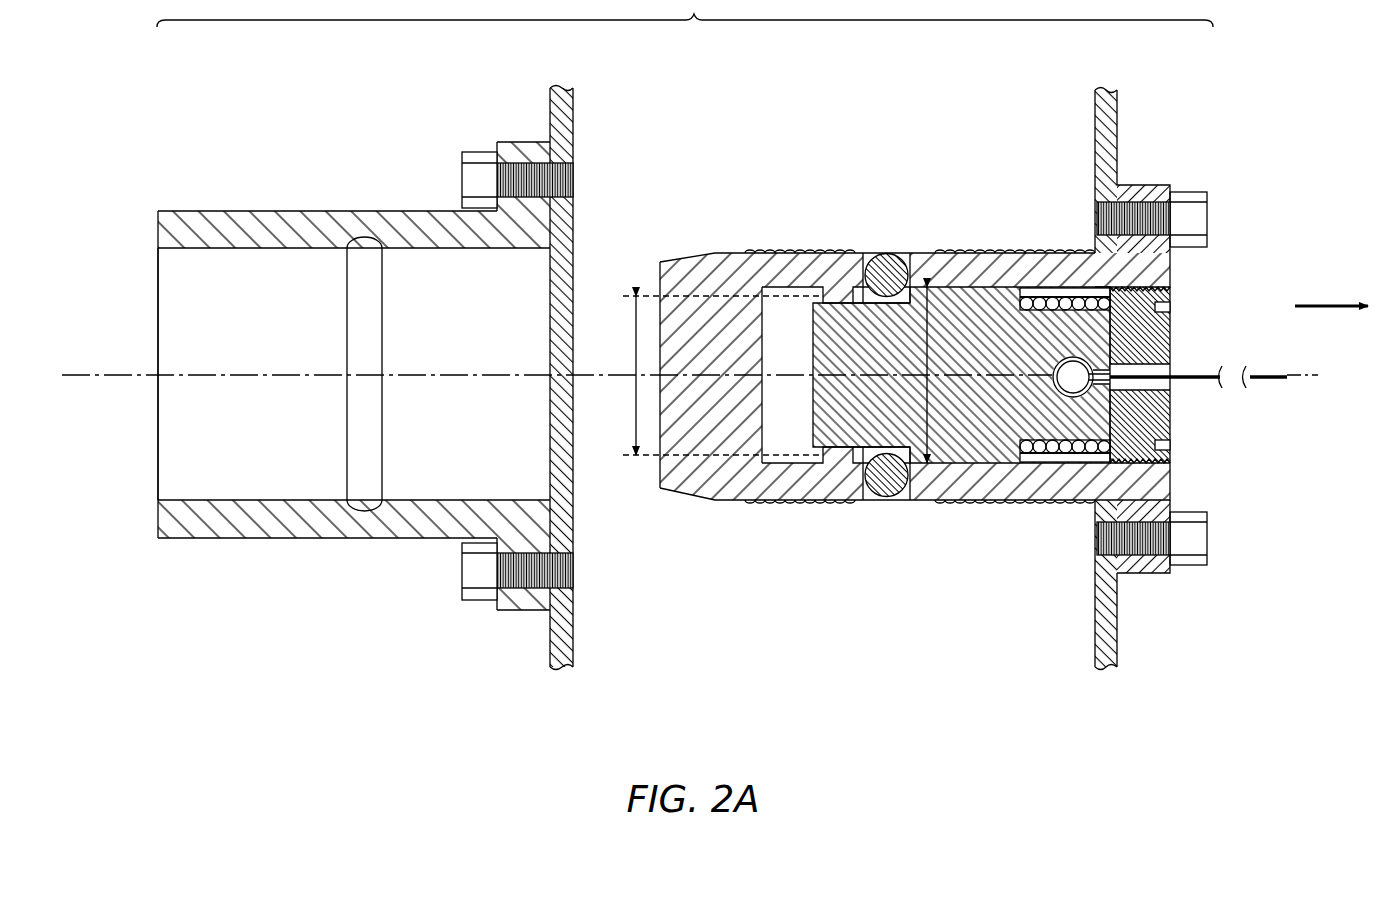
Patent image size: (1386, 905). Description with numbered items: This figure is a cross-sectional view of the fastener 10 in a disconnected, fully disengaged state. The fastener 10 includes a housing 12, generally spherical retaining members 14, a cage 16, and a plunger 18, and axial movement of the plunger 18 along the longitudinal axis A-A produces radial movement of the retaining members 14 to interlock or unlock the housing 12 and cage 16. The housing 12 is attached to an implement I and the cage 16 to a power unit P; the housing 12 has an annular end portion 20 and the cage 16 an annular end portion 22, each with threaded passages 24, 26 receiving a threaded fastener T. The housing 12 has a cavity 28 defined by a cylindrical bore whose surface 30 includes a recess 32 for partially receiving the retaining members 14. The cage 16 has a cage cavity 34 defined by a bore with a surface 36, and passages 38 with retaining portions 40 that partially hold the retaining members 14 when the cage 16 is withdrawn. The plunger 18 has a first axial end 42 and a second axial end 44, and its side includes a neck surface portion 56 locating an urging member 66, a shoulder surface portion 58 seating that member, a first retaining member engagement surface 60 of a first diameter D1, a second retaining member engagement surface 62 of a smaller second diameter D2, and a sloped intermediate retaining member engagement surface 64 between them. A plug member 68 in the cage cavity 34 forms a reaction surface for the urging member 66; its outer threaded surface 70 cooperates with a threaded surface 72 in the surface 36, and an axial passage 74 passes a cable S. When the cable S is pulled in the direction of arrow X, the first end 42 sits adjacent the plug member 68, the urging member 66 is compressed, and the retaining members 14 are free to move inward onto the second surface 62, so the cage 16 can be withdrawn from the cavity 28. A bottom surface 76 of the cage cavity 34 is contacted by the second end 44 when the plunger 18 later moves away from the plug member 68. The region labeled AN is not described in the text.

The fastener 10 is at (685, 13).
The housing 12 is at (696, 376).
The retaining members 14 is at (884, 300).
The cage 16 is at (938, 373).
The plunger 18 is at (951, 442).
The annular end portion 20 is at (518, 150).
The annular end portion 22 is at (1140, 185).
The threaded passage 24 is at (833, 376).
The threaded passage 26 is at (1155, 200).
The cavity 28 is at (496, 308).
The surface 30 is at (232, 244).
The recess 32 is at (350, 248).
The cage cavity 34 is at (780, 253).
The surface 36 is at (785, 468).
The passages 38 is at (907, 298).
The retaining portions 40 is at (884, 264).
The first axial end 42 is at (1044, 293).
The second axial end 44 is at (806, 414).
The neck surface portion 56 is at (1060, 450).
The shoulder surface portion 58 is at (1015, 458).
The first retaining member engagement surface 60 is at (968, 287).
The second retaining member engagement surface 62 is at (790, 326).
The intermediate retaining member engagement surface 64 is at (952, 287).
The urging member 66 is at (1040, 287).
The plug member 68 is at (1177, 345).
The outer threaded surface 70 is at (1168, 300).
The threaded surface 72 is at (1152, 284).
The axial passage 74 is at (1165, 370).
The bottom surface 76 is at (766, 394).
The longitudinal axis A is at (692, 376).
The arrow X is at (1331, 290).
The first diameter D1 is at (927, 375).
The second diameter D2 is at (722, 375).
The implement I is at (574, 92).
The power unit P is at (1117, 106).
The cable S is at (1182, 382).
The threaded fastener T is at (470, 182).
The annular region AN is at (1140, 427).